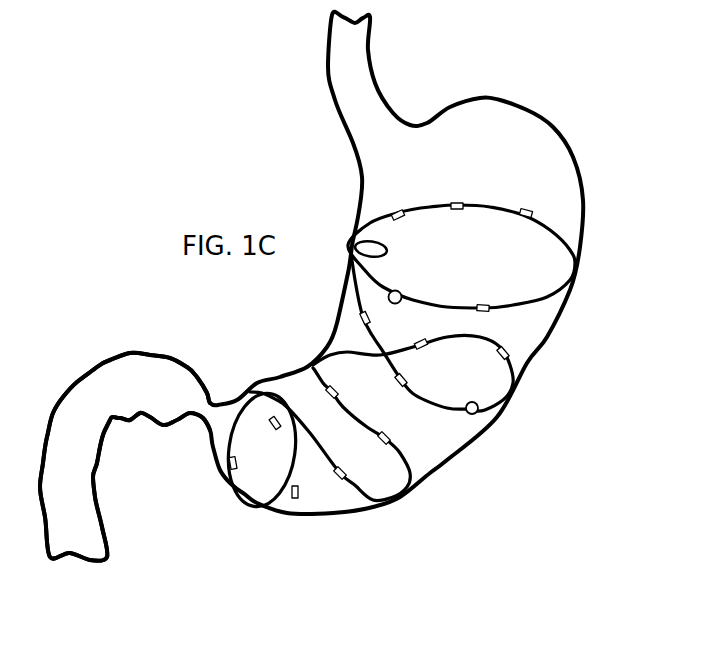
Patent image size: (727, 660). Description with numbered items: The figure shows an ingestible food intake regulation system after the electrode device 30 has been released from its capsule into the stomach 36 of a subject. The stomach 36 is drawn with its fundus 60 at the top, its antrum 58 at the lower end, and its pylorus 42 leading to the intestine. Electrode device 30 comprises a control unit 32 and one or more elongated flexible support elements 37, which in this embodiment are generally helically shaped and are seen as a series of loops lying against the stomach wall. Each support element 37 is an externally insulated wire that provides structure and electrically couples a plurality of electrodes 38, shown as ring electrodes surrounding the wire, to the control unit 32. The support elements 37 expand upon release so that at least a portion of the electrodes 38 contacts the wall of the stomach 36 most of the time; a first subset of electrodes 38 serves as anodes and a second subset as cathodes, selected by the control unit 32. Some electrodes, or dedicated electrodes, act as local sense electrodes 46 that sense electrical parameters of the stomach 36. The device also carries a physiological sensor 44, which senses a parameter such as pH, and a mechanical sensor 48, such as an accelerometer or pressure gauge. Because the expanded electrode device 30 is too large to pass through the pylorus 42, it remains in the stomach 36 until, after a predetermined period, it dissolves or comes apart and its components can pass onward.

The fundus 60 is at (547, 113).
The pylorus 42 is at (217, 400).
The elongated flexible support element 37 is at (497, 206).
The control unit 32 is at (386, 244).
The local sense electrode 46 is at (397, 381).
The stomach 36 is at (571, 373).
The antrum 58 is at (293, 517).
The mechanical sensor 48 is at (396, 291).
The physiological sensor 44 is at (474, 415).
The electrode device 30 is at (393, 194).
The electrode 38 is at (532, 210).